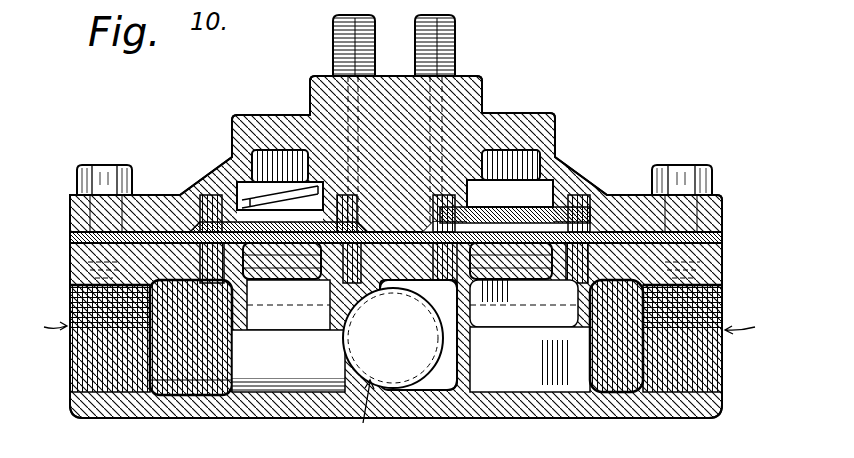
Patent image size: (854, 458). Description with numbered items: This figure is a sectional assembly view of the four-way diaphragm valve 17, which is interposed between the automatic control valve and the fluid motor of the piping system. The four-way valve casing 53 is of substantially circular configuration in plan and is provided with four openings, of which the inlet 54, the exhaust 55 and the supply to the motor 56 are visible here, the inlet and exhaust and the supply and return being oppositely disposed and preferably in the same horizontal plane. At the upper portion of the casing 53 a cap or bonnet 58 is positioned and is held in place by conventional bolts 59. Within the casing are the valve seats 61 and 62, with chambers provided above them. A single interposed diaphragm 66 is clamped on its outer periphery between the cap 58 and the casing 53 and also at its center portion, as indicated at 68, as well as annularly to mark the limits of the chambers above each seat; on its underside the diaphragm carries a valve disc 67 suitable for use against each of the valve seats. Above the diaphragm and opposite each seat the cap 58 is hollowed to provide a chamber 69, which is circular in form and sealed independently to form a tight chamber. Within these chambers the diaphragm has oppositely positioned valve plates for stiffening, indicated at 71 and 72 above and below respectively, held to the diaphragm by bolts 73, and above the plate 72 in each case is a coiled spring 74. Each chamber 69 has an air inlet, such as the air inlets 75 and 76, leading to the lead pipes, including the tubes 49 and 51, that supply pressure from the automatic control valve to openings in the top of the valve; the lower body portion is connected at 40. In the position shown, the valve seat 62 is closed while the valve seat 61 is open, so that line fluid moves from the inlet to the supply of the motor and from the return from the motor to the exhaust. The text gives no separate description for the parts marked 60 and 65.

The four-way diaphragm valve 17 is at (199, 427).
The lower body portion connection 40 is at (484, 92).
The tube 49 is at (455, 32).
The tube 51 is at (333, 30).
The four-way valve casing 53 is at (620, 418).
The inlet 54 is at (712, 373).
The exhaust 55 is at (80, 357).
The supply to the motor 56 is at (405, 387).
The cap or bonnet 58 is at (637, 195).
The bolts 59 is at (104, 165).
The housing 60 is at (80, 252).
The valve seat 61 is at (556, 336).
The valve seat 62 is at (232, 282).
The valve stem guide 65 is at (582, 248).
The diaphragm 66 is at (722, 238).
The valve disc 67 is at (200, 222).
The center clamping portion 68 is at (395, 245).
The chamber 69 is at (203, 200).
The valve plate 71 is at (288, 361).
The valve plate 72 is at (288, 305).
The bolts 73 is at (245, 205).
The coiled spring 74 is at (240, 200).
The air inlet 75 is at (440, 205).
The air inlet 76 is at (345, 205).